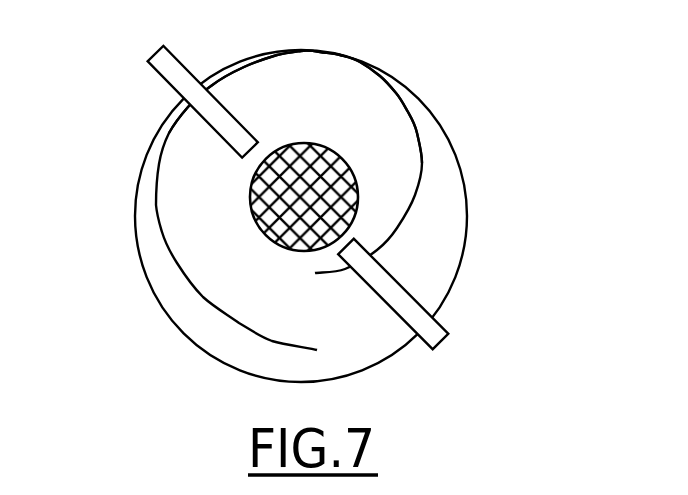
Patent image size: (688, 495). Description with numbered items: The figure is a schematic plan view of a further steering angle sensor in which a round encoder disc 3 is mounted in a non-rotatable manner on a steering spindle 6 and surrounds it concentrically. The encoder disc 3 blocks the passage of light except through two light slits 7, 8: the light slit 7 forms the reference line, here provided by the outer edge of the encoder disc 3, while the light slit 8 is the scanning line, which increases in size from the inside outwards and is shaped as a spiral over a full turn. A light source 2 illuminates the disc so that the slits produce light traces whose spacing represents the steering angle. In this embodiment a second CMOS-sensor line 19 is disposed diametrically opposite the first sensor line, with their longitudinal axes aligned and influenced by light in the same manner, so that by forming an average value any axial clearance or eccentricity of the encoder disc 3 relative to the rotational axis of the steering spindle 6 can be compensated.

The light source 2 is at (453, 314).
The encoder disc 3 is at (494, 99).
The steering spindle 6 is at (253, 214).
The light slit (reference line) 7 is at (401, 69).
The light slit (scanning line) 8 is at (335, 78).
The second CMOS-sensor line 19 is at (149, 83).